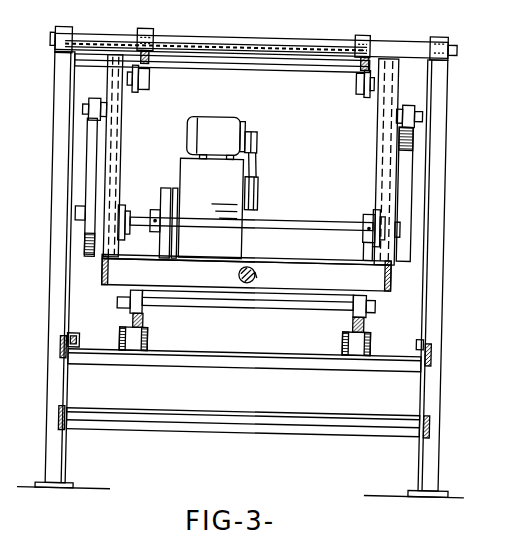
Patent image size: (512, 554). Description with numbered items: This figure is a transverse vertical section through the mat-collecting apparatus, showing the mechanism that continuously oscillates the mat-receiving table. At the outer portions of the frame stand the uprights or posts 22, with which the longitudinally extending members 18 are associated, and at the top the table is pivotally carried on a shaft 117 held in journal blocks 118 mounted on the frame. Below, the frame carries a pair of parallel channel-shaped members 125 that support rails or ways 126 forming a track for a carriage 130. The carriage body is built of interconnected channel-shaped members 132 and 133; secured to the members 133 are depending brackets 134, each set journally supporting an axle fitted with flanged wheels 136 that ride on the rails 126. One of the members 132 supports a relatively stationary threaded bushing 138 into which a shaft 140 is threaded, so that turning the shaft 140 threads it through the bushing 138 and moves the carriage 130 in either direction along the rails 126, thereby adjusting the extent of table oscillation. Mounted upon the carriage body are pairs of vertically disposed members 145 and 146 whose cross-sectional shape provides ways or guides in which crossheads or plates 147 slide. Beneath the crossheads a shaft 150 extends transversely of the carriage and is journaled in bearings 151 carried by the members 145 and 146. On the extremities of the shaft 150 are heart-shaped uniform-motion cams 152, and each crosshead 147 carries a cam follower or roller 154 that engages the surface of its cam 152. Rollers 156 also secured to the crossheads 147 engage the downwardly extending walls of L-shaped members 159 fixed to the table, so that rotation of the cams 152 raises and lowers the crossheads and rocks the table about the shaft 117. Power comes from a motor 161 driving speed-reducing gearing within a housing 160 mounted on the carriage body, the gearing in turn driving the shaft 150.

The longitudinally extending member 18 is at (70, 338).
The upright or post 22 is at (68, 393).
The shaft 117 is at (325, 42).
The journal block 118 is at (435, 33).
The parallel member 125 is at (150, 348).
The rail or way 126 is at (148, 331).
The carriage 130 is at (311, 258).
The channel-shaped member 132 is at (325, 273).
The channel-shaped member 133 is at (112, 276).
The depending bracket 134 is at (135, 320).
The flanged wheel 136 is at (117, 308).
The threaded bushing 138 is at (238, 277).
The shaft 140 is at (256, 275).
The vertically disposed member 145 is at (117, 133).
The vertically disposed member 146 is at (383, 120).
The crosshead or plate 147 is at (116, 121).
The shaft 150 is at (309, 221).
The bearing 151 is at (124, 215).
The cam 152 is at (86, 144).
The cam follower or roller 154 is at (98, 109).
The roller 156 is at (142, 93).
The L-shaped member 159 is at (133, 62).
The housing 160 is at (232, 184).
The motor 161 is at (204, 120).